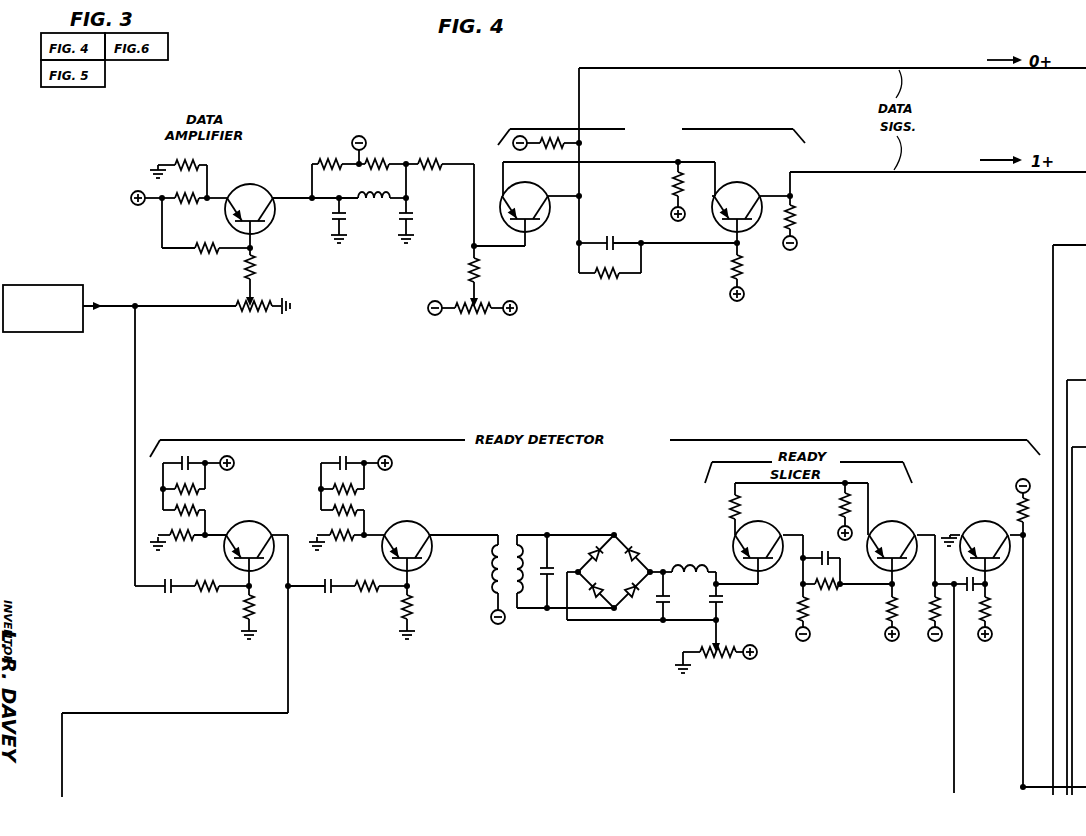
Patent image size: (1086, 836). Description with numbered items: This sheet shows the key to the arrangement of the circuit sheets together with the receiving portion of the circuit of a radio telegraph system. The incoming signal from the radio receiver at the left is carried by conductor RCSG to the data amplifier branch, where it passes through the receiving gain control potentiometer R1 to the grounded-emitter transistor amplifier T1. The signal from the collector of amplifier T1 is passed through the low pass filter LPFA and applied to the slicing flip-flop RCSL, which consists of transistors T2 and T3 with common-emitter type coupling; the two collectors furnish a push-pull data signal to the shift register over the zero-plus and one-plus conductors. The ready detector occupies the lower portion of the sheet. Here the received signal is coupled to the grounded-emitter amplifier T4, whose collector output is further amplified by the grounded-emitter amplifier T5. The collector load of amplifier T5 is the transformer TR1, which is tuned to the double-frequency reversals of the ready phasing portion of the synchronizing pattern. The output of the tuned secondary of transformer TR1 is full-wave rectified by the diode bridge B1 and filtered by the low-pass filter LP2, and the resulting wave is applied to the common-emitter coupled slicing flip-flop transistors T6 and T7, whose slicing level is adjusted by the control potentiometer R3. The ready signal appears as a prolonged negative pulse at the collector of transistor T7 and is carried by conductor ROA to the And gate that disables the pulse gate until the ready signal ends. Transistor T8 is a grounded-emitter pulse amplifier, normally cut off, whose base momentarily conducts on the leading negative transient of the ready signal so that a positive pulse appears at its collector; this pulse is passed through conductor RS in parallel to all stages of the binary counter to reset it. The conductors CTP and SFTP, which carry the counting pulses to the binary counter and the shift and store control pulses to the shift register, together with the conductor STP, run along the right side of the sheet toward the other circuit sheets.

The grounded-emitter transistor amplifier T1 is at (266, 184).
The transistor T2 is at (520, 186).
The transistor T3 is at (732, 186).
The grounded-emitter amplifier T4 is at (246, 524).
The grounded-emitter amplifier T5 is at (404, 524).
The slicing flip-flop transistor T6 is at (756, 524).
The slicing flip-flop transistor T7 is at (889, 524).
The transistor T8 is at (981, 524).
The receiving gain control potentiometer R1 is at (256, 306).
The control potentiometer R3 is at (720, 651).
The diode bridge B1 is at (614, 571).
The transformer TR1 is at (552, 570).
The low-pass filter LP2 is at (686, 594).
The low pass filter LPFA is at (391, 191).
The conductor RCSG is at (117, 306).
The slicing flip-flop RCSL is at (651, 133).
The conductor SFTP is at (1053, 263).
The stop pulse line STP is at (1067, 407).
The conductor CTP is at (1072, 452).
The conductor ROA is at (954, 694).
The conductor RS is at (1023, 701).